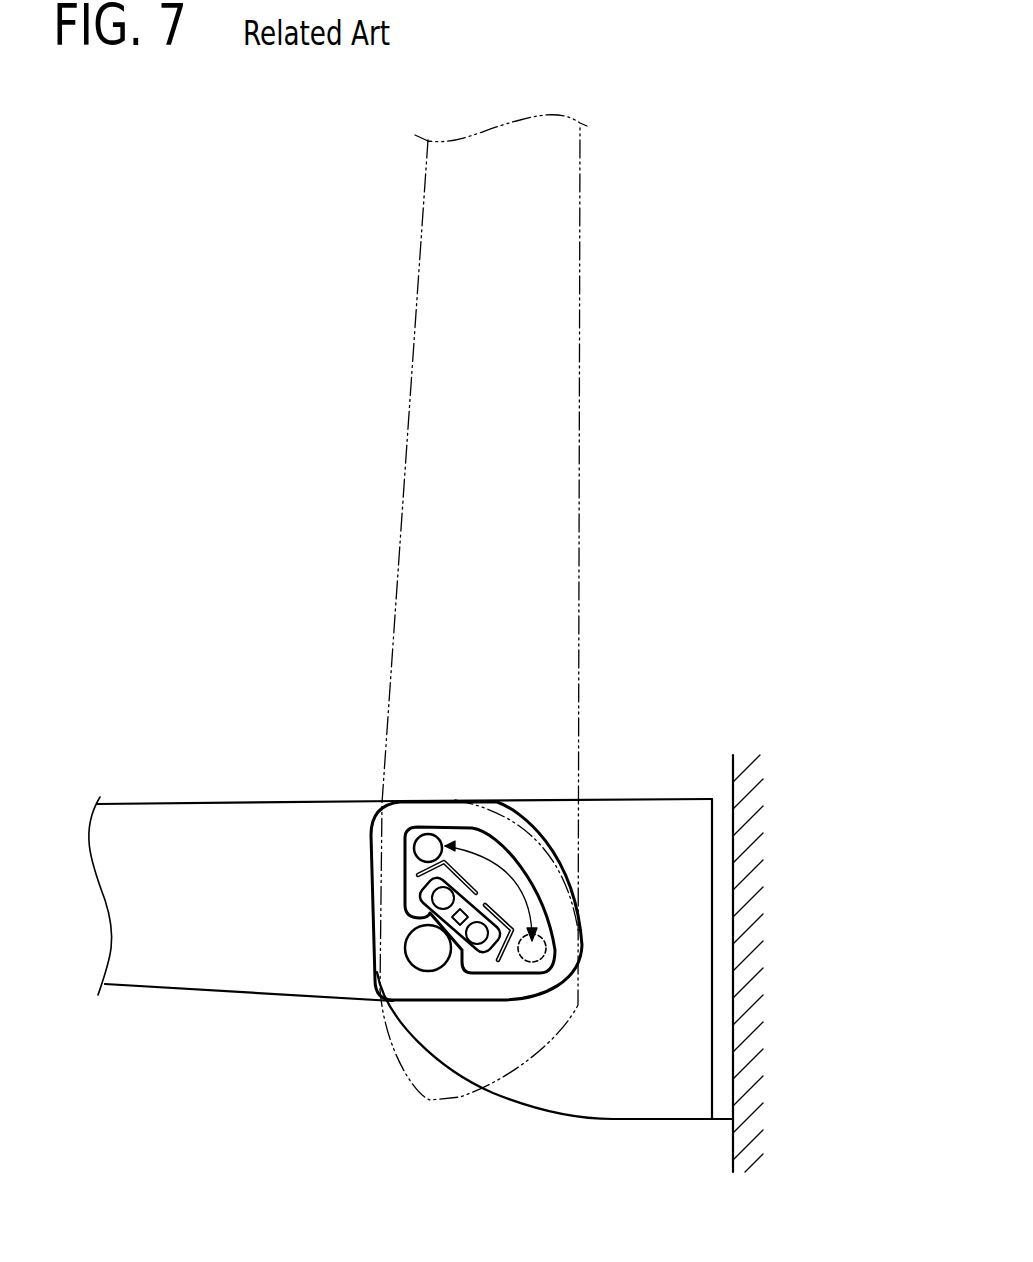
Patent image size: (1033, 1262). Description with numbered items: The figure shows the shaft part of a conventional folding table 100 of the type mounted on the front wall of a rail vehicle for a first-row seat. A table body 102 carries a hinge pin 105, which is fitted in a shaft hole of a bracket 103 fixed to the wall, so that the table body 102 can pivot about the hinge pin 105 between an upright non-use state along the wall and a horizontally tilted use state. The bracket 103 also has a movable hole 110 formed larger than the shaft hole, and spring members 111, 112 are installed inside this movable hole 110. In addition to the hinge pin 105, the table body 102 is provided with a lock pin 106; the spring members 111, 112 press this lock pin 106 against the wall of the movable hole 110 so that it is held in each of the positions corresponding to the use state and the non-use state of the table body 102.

The folding table 100 is at (284, 563).
The table body 102 is at (578, 493).
The bracket 103 is at (633, 801).
The hinge pin 105 is at (415, 948).
The lock pin 106 is at (424, 838).
The movable hole 110 is at (548, 905).
The spring member 111 is at (420, 862).
The spring member 112 is at (514, 962).